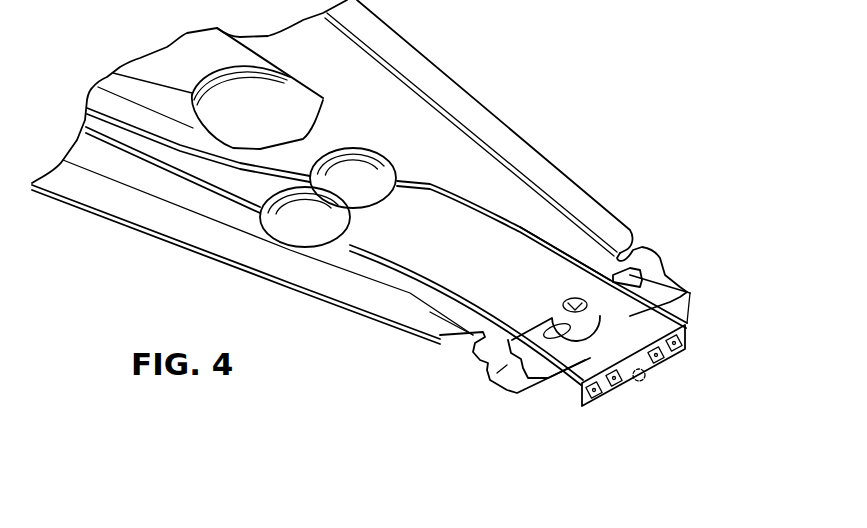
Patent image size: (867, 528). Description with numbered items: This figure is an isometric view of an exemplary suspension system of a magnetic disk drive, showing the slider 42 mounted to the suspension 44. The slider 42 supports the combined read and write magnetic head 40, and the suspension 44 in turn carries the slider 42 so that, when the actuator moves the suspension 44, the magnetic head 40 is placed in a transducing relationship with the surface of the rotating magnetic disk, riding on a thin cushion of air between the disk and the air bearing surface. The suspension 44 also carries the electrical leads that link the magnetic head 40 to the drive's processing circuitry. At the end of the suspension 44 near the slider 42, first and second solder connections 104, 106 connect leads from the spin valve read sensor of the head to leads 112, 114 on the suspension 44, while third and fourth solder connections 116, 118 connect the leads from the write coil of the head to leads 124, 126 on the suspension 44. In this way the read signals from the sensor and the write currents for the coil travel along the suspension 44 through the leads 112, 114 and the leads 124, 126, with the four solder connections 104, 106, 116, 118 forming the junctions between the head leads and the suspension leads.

The magnetic head 40 is at (645, 383).
The slider 42 is at (533, 400).
The suspension 44 is at (500, 105).
The first solder connection 104 is at (594, 393).
The second solder connection 106 is at (681, 343).
The lead 112 is at (365, 253).
The lead 114 is at (548, 246).
The third solder connection 116 is at (614, 384).
The fourth solder connection 118 is at (660, 360).
The lead 124 is at (420, 277).
The lead 126 is at (472, 206).